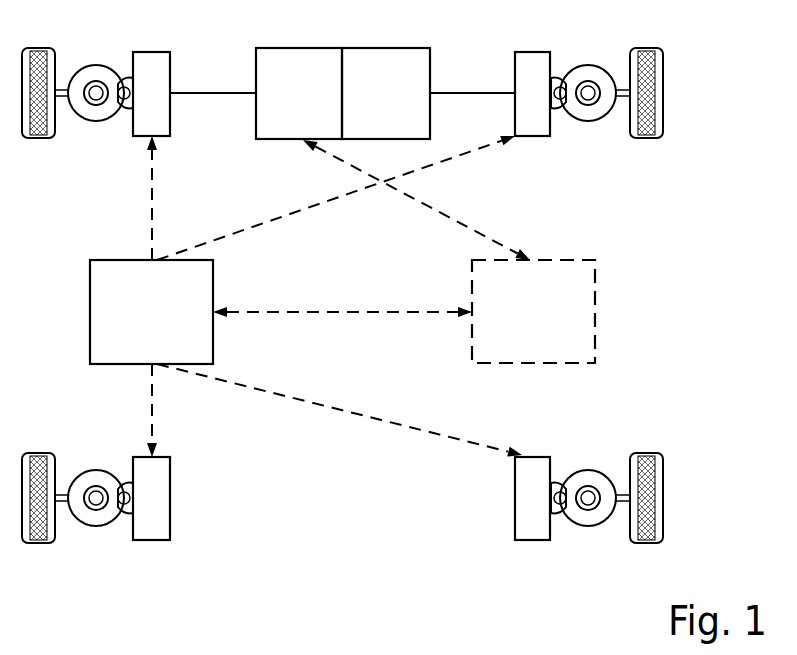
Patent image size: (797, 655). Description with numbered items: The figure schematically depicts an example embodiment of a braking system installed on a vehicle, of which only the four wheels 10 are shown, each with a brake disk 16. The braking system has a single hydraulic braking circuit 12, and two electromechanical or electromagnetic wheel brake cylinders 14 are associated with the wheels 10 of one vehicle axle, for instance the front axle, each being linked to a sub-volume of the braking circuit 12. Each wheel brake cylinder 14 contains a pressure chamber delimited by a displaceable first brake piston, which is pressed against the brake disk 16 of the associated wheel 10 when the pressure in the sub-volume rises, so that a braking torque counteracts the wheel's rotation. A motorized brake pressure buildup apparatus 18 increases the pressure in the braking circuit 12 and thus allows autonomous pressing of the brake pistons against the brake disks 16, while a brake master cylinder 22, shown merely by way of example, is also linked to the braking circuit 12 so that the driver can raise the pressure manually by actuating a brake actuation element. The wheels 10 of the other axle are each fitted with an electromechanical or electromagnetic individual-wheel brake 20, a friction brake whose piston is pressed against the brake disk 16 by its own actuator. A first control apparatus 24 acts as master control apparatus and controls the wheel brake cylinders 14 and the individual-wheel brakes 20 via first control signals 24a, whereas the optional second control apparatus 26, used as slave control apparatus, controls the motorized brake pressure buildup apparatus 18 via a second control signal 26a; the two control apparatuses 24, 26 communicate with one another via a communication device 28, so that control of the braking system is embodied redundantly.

The wheel 10 is at (37, 58).
The hydraulic braking circuit 12 is at (210, 91).
The electromechanical or electromagnetic wheel brake cylinder 14 is at (170, 118).
The brake disk 16 is at (96, 74).
The motorized brake pressure buildup apparatus 18 is at (300, 59).
The electromechanical or electromagnetic individual-wheel brake 20 is at (170, 497).
The brake master cylinder 22 is at (385, 59).
The first control apparatus 24 is at (90, 312).
The first control signal 24a is at (222, 237).
The second control apparatus 26 is at (595, 312).
The second control signal 26a is at (498, 208).
The communication device 28 is at (343, 315).